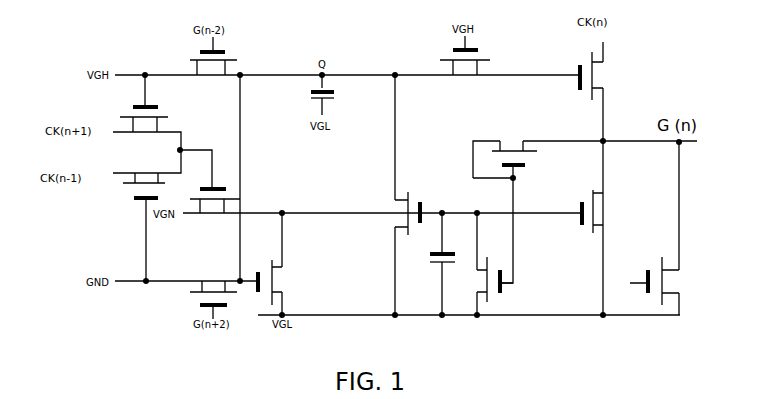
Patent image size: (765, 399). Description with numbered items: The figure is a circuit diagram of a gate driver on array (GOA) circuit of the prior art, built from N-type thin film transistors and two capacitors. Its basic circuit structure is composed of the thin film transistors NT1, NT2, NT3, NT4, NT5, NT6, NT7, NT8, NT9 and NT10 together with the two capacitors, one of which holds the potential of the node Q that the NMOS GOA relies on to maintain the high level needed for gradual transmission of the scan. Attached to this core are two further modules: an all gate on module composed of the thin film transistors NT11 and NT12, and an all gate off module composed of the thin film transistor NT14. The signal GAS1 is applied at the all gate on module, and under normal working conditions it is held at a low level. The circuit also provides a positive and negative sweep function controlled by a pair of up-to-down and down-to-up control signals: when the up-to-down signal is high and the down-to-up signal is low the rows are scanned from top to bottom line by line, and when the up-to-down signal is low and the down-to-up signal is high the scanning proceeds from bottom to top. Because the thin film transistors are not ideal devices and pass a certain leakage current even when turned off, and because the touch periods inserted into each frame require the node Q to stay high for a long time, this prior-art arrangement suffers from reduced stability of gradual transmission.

The thin film transistor NT1 is at (213, 66).
The thin film transistor NT2 is at (213, 292).
The thin film transistor NT3 is at (147, 112).
The thin film transistor NT4 is at (147, 215).
The thin film transistor NT5 is at (210, 189).
The thin film transistor NT6 is at (265, 275).
The thin film transistor NT7 is at (465, 65).
The thin film transistor NT8 is at (583, 82).
The thin film transistor NT9 is at (412, 205).
The thin film transistor NT10 is at (576, 219).
The thin film transistor NT11 is at (505, 151).
The thin film transistor NT12 is at (499, 242).
The thin film transistor NT14 is at (644, 281).
The signal GAS1 is at (522, 284).